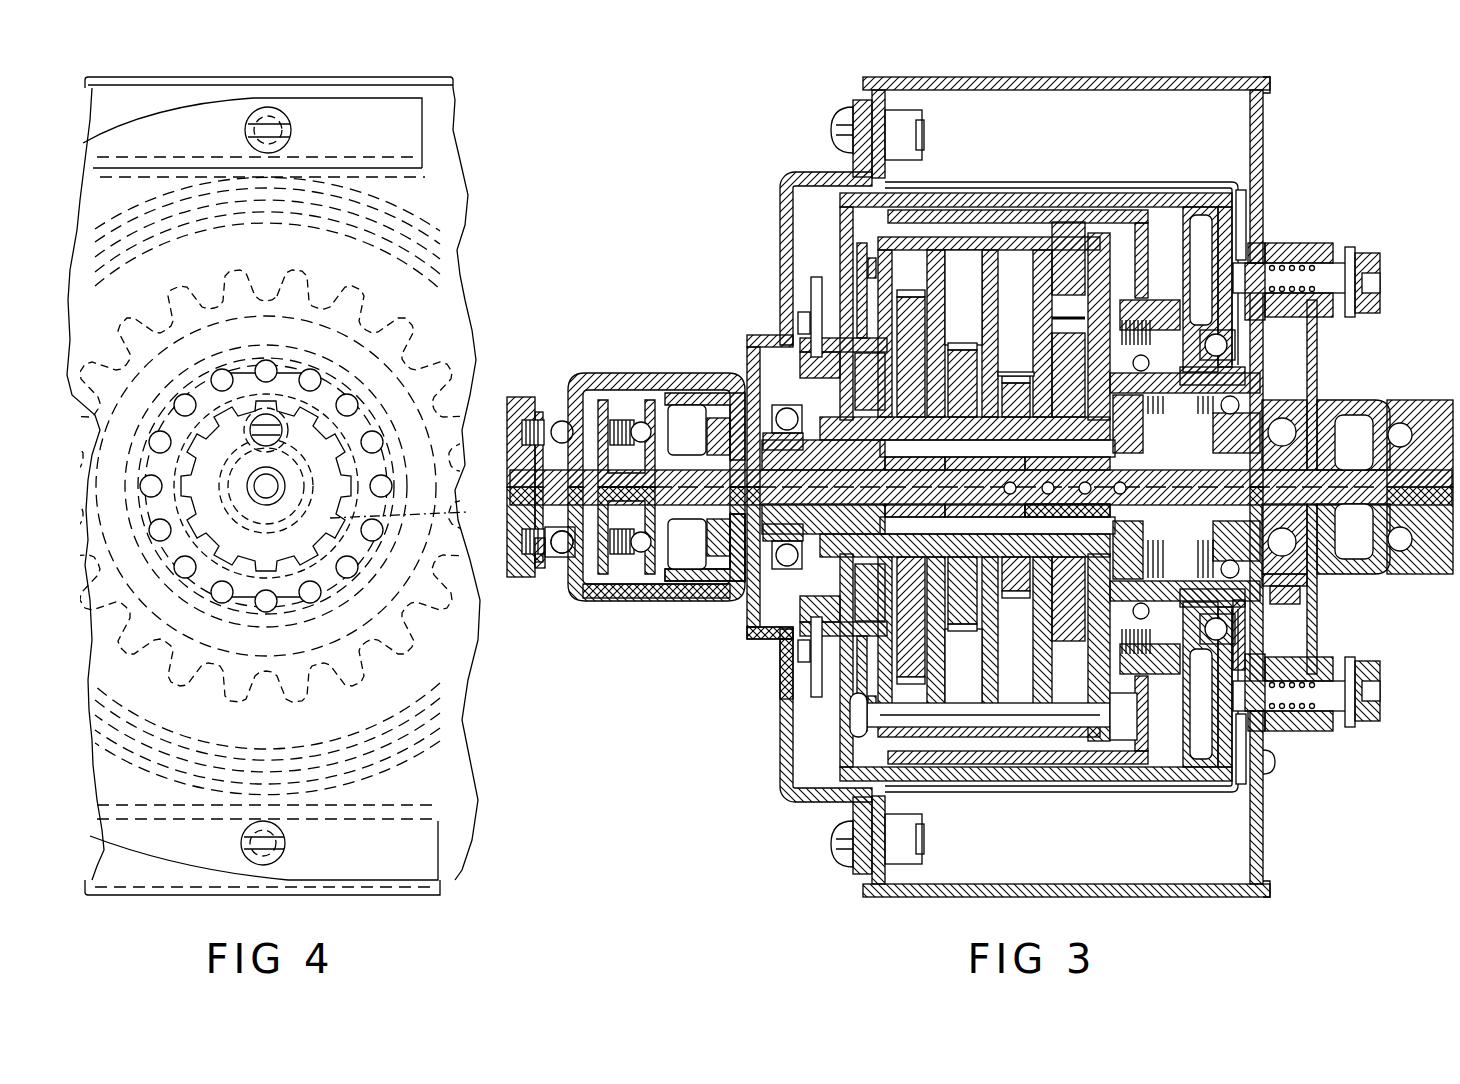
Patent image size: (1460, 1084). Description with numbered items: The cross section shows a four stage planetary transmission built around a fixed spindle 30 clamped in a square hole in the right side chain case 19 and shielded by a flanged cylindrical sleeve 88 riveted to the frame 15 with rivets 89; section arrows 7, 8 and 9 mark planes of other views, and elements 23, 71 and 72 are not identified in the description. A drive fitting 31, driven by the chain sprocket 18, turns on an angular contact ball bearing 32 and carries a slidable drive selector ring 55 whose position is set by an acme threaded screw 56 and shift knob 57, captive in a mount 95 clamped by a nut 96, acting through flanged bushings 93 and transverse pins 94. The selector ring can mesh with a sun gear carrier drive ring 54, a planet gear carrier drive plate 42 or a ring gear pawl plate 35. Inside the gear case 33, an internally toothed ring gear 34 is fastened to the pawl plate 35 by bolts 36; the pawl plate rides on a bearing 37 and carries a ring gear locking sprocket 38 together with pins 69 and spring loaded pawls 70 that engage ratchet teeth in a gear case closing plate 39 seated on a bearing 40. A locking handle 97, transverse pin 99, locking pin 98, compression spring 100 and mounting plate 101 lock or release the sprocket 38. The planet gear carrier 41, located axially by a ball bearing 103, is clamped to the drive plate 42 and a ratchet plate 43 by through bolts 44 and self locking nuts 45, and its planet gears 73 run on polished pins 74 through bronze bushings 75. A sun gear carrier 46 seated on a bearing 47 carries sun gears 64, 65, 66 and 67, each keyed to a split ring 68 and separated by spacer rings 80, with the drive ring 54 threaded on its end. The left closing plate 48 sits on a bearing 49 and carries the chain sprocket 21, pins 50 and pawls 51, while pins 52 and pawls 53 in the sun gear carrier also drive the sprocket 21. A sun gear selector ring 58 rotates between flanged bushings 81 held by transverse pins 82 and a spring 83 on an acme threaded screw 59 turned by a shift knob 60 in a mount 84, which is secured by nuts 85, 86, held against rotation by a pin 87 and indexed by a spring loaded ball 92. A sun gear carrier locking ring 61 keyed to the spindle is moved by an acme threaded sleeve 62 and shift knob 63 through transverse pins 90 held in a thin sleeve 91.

In FIG. 4, the frame 15 is at (454, 114).
In FIG. 3, the frame 15 is at (1268, 122).
In FIG. 4, the casing cover 23 is at (454, 151).
In FIG. 3, the casing cover 23 is at (778, 198).
In FIG. 4, the chain sprocket 21 is at (356, 274).
In FIG. 3, the chain sprocket 21 is at (810, 298).
In FIG. 4, the mount 84 is at (336, 440).
In FIG. 3, the mount 84 is at (646, 374).
In FIG. 4, the shift knob 60 is at (396, 460).
In FIG. 3, the shift knob 60 is at (534, 553).
In FIG. 4, the acme threaded screw 59 is at (282, 487).
In FIG. 3, the acme threaded screw 59 is at (552, 547).
In FIG. 4, the angular contact ball bearing 49 is at (412, 512).
In FIG. 3, the angular contact ball bearing 49 is at (805, 338).
In FIG. 3, the gear case 33 is at (900, 194).
In FIG. 3, the internally toothed ring gear 34 is at (920, 210).
In FIG. 3, the planet gear carrier 41 is at (950, 240).
In FIG. 3, the flanged cylindrical sleeve 88 is at (1085, 182).
In FIG. 3, the gear case closing plate 39 is at (1283, 204).
In FIG. 3, the ring gear locking pin 98 is at (1260, 246).
In FIG. 3, the right side chain case 19 is at (1265, 278).
In FIG. 3, the mounting plate 101 is at (1325, 243).
In FIG. 3, the transverse pin 99 is at (1350, 250).
In FIG. 3, the ring gear locking handle 97 is at (1376, 256).
In FIG. 3, the compression spring 100 is at (1315, 316).
In FIG. 3, the section line 7 is at (840, 218).
In FIG. 3, the section line 8 is at (1072, 172).
In FIG. 3, the section line 9 is at (1195, 172).
In FIG. 3, the planet gear carrier ratchet plate 43 is at (855, 247).
In FIG. 3, the gear case closing plate 48 is at (866, 269).
In FIG. 3, the spring loaded pawls 51 is at (798, 314).
In FIG. 3, the pins 50 is at (810, 342).
In FIG. 3, the sun gear carrier 46 is at (770, 370).
In FIG. 3, the sun gear carrier locking ring 61 is at (695, 390).
In FIG. 3, the spring loaded ball 92 is at (560, 422).
In FIG. 3, the nut 85 is at (720, 420).
In FIG. 3, the nut 86 is at (707, 423).
In FIG. 3, the angular contact ball bearing 47 is at (787, 487).
In FIG. 3, the ring gear pawl plate 35 is at (1180, 270).
In FIG. 3, the planet gear carrier drive plate 42 is at (1113, 280).
In FIG. 3, the bolts 36 is at (1178, 320).
In FIG. 3, the ball bearing 103 is at (1160, 340).
In FIG. 3, the sun gear 64 is at (921, 293).
In FIG. 3, the split ring 68 is at (921, 405).
In FIG. 3, the sun gear 65 is at (970, 349).
In FIG. 3, the thin spacer ring 80 is at (990, 412).
In FIG. 3, the sun gear 66 is at (1026, 377).
In FIG. 3, the planet gears 73 is at (1060, 267).
In FIG. 3, the polished pins 74 is at (1052, 308).
In FIG. 3, the oil filled sintered bronze bushings 75 is at (1054, 296).
In FIG. 3, the angular contact ball bearing 40 is at (1228, 344).
In FIG. 3, the chain sprocket 18 is at (1315, 351).
In FIG. 3, the spindle 30 is at (1352, 400).
In FIG. 3, the angular contact ball bearing 32 is at (1312, 428).
In FIG. 3, the mount 95 is at (1400, 418).
In FIG. 3, the nut 96 is at (1354, 442).
In FIG. 3, the drive selector ring 55 is at (1185, 487).
In FIG. 3, the drive fitting 31 is at (1257, 465).
In FIG. 3, the thin sleeve 91 is at (915, 454).
In FIG. 3, the transverse pins 82 is at (985, 454).
In FIG. 3, the sun gear selector ring 58 is at (939, 487).
In FIG. 3, the transverse pins 90 is at (915, 520).
In FIG. 3, the stiff compression spring 83 is at (985, 520).
In FIG. 3, the flanged bushings 81 is at (1061, 520).
In FIG. 3, the flanged bushings 93 is at (1166, 540).
In FIG. 3, the transverse pins 94 is at (1210, 540).
In FIG. 3, the acme threaded screw 56 is at (1354, 531).
In FIG. 3, the shift knob 57 is at (1440, 576).
In FIG. 3, the angular contact ball bearing 37 is at (1300, 574).
In FIG. 3, the pins 69 is at (1290, 598).
In FIG. 3, the spring loaded pawls 70 is at (1295, 615).
In FIG. 3, the ring gear locking sprocket 38 is at (1246, 650).
In FIG. 3, the acme threaded sleeve 62 is at (692, 524).
In FIG. 3, the pin 87 is at (733, 560).
In FIG. 3, the pins 52 is at (760, 634).
In FIG. 3, the spring loaded pawls 53 is at (778, 650).
In FIG. 3, the sun gear 67 is at (1038, 588).
In FIG. 3, the drive ring 54 is at (1086, 570).
In FIG. 3, the disc 72 is at (935, 694).
In FIG. 3, the self locking nuts 45 is at (1118, 738).
In FIG. 3, the plate 71 is at (932, 764).
In FIG. 3, the through bolts 44 is at (1005, 715).
In FIG. 3, the rivets 89 is at (1276, 760).
In FIG. 3, the shift knob 63 is at (587, 584).